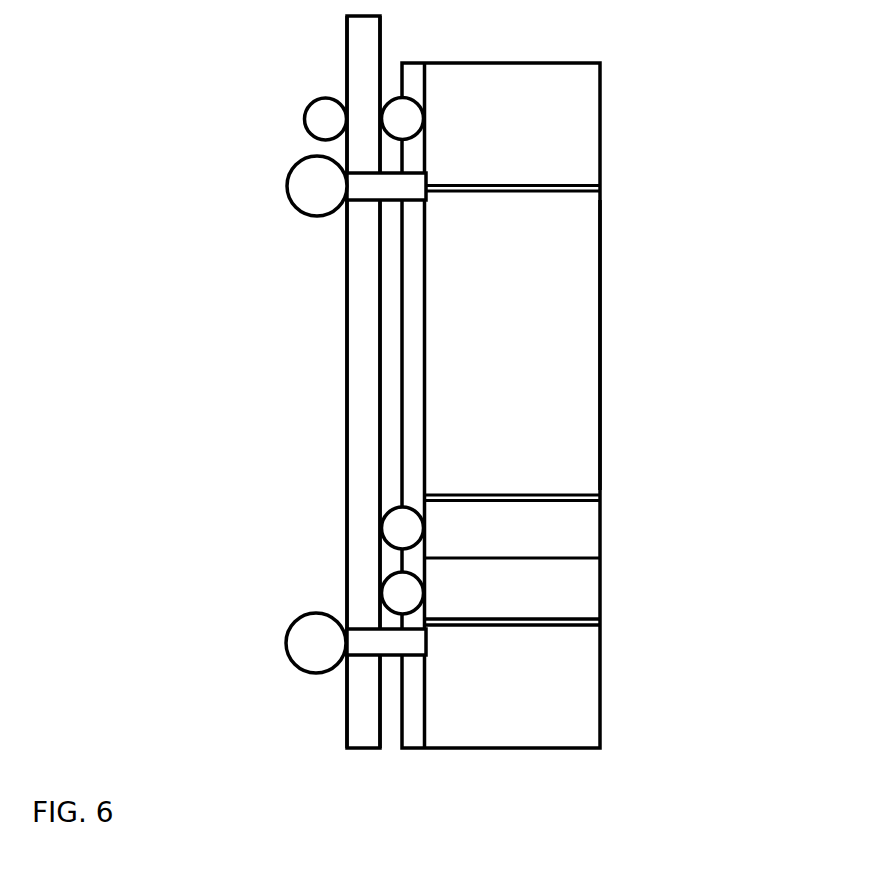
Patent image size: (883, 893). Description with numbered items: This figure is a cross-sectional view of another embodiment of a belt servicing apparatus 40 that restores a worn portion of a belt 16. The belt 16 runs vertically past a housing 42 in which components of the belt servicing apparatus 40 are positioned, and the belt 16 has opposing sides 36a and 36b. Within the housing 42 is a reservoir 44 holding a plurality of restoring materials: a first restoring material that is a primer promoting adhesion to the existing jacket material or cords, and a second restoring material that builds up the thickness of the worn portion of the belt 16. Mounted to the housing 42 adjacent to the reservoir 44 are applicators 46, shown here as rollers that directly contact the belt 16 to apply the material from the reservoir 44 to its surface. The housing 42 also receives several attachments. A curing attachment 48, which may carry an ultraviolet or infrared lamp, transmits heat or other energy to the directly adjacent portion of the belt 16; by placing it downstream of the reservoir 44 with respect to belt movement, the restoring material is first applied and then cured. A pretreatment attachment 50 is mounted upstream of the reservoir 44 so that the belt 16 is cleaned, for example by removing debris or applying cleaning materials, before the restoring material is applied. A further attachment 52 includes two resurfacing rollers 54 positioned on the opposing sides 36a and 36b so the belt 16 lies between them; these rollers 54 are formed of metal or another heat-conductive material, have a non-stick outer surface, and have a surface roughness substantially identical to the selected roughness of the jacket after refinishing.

The belt 16 is at (357, 437).
The first side of the belt 36a is at (347, 260).
The second side of the belt 36b is at (382, 727).
The belt servicing apparatus 40 is at (486, 408).
The housing 42 is at (600, 352).
The reservoir 44 is at (580, 527).
The applicator 46 is at (403, 527).
The curing attachment 48 is at (557, 430).
The pretreatment attachment 50 is at (512, 661).
The resurfacing attachment 52 is at (512, 150).
The resurfacing roller 54 is at (402, 117).